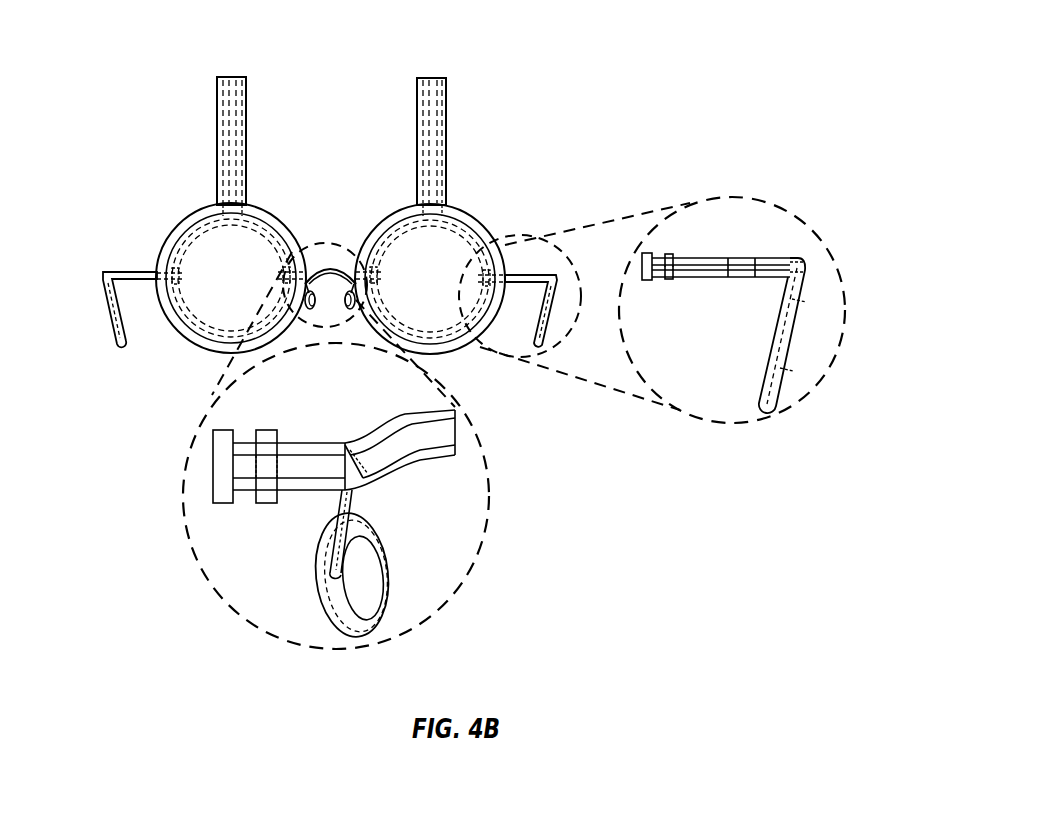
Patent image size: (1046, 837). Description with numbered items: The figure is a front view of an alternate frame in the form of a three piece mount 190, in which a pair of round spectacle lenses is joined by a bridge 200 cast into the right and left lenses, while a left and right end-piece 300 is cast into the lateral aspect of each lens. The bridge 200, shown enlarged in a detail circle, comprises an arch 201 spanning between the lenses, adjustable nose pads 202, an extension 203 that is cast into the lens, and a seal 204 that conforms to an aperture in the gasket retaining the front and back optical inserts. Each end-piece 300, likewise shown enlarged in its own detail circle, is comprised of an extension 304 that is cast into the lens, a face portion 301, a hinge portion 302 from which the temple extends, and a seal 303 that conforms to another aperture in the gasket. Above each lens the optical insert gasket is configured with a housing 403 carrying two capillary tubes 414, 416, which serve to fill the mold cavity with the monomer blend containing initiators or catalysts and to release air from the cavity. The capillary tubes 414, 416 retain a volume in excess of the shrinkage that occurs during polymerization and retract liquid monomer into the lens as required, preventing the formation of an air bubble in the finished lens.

The three piece mount 190 is at (143, 61).
The bridge 200 is at (317, 239).
The arch 201 is at (451, 407).
The adjustable nose pads 202 is at (391, 531).
The extension 203 is at (242, 500).
The seal 204 is at (264, 509).
The end-piece 300 is at (128, 268).
The face portion 301 is at (699, 284).
The hinge portion 302 is at (813, 262).
The seal 303 is at (666, 285).
The extension 304 is at (660, 250).
The housing 403 is at (216, 170).
The capillary tube 414 is at (225, 123).
The capillary tube 416 is at (243, 113).